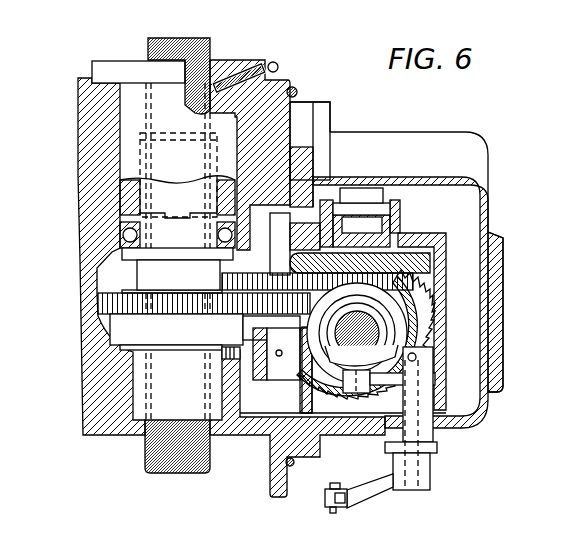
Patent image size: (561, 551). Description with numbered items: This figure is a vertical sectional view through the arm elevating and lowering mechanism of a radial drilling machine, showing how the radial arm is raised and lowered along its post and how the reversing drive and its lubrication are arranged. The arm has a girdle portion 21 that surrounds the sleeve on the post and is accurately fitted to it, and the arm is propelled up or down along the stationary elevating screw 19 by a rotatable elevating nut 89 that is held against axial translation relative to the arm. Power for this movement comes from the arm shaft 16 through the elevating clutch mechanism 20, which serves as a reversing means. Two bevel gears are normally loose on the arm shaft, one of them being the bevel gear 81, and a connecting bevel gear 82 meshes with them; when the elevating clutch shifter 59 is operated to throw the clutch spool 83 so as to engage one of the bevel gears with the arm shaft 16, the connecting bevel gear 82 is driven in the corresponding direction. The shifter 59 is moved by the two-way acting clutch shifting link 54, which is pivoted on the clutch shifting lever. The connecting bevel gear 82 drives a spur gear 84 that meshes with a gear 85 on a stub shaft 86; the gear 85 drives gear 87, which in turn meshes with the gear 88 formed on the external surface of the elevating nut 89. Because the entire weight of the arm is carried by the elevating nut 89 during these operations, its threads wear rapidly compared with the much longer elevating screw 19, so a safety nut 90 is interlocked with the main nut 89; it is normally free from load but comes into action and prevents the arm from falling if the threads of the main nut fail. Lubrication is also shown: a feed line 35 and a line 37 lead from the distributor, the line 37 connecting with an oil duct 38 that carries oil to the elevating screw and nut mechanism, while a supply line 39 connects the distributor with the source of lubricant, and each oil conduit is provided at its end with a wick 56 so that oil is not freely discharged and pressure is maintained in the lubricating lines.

The arm shaft 16 is at (373, 333).
The elevating screw 19 is at (147, 47).
The elevating clutch mechanism 20 is at (452, 233).
The girdle portion 21 is at (80, 368).
The feed line 35 is at (302, 97).
The line 37 is at (279, 62).
The oil duct 38 is at (242, 72).
The supply line 39 is at (295, 88).
The clutch shifting link 54 is at (323, 500).
The wick 56 is at (215, 95).
The elevating clutch shifter 59 is at (430, 468).
The bevel gear 81 is at (428, 302).
The connecting bevel gear 82 is at (432, 266).
The clutch spool 83 is at (393, 322).
The spur gear 84 is at (405, 283).
The gear 85 is at (222, 283).
The stub shaft 86 is at (272, 262).
The gear 87 is at (262, 318).
The gear 88 is at (100, 303).
The elevating nut 89 is at (137, 276).
The safety nut 90 is at (163, 193).